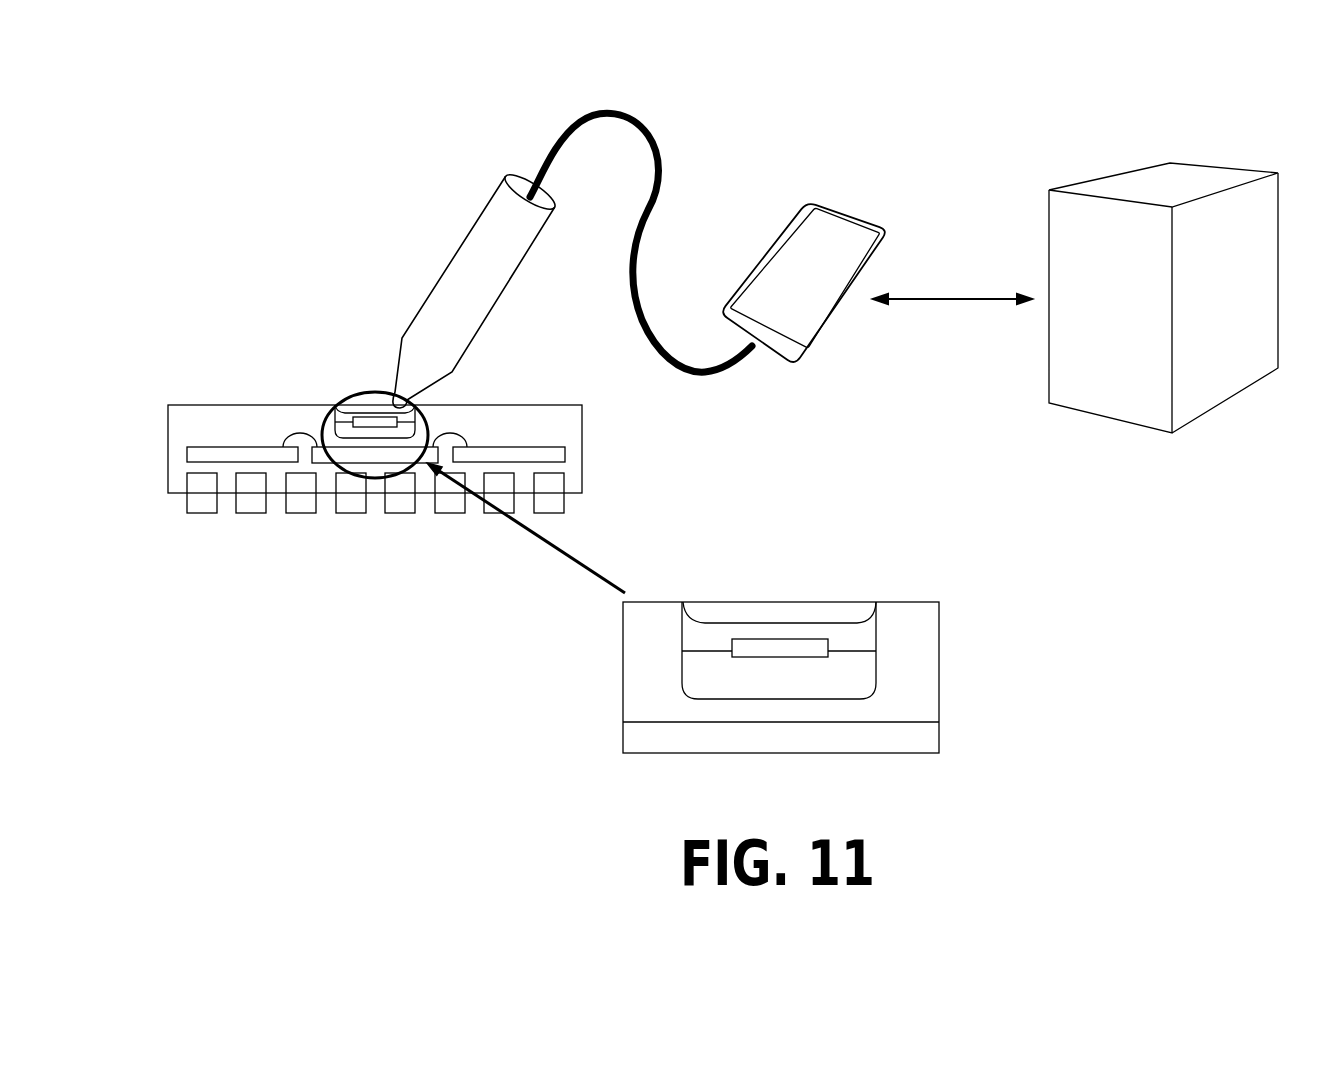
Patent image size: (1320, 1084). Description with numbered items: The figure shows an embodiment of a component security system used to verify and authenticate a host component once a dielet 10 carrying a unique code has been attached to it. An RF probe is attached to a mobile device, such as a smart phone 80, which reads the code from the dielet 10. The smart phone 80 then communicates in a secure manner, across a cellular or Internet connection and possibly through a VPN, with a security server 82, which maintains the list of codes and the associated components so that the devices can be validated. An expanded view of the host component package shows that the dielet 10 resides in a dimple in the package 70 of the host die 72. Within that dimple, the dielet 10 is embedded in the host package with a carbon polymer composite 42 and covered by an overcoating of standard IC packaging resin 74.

The dielet 10 is at (360, 413).
The carbon polymer composite 42 is at (822, 688).
The package 70 is at (168, 445).
The host die 72 is at (322, 463).
The standard IC packaging resin 74 is at (830, 630).
The smart phone 80 is at (848, 208).
The security server 82 is at (1225, 167).